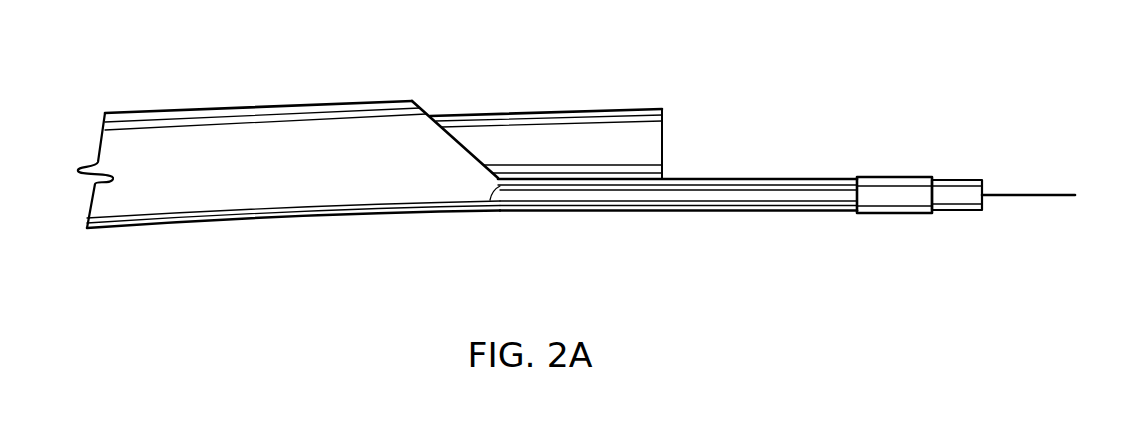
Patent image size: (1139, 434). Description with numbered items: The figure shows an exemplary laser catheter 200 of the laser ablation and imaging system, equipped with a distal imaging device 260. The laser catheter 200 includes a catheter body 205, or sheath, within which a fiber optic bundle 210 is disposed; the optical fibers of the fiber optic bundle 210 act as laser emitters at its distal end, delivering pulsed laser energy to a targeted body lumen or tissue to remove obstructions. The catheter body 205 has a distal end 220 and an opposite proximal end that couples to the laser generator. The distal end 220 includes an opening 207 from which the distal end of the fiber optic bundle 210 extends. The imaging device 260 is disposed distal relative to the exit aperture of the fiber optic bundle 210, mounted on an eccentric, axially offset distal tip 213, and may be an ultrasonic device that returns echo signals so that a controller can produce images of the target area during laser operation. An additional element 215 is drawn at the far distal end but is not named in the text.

The laser catheter 200 is at (586, 161).
The catheter body 205 is at (332, 117).
The opening 207 is at (455, 106).
The fiber optic bundle 210 is at (532, 113).
The distal tip 213 is at (715, 213).
The wire 215 is at (1047, 193).
The distal end 220 is at (525, 234).
The imaging device 260 is at (907, 178).